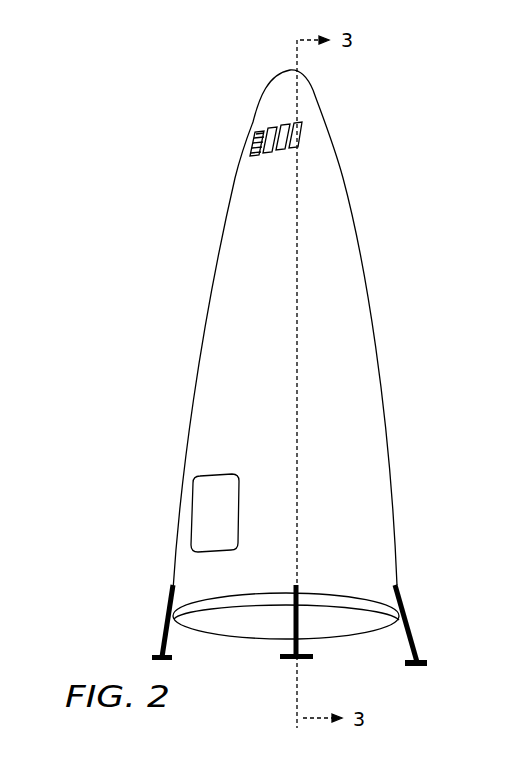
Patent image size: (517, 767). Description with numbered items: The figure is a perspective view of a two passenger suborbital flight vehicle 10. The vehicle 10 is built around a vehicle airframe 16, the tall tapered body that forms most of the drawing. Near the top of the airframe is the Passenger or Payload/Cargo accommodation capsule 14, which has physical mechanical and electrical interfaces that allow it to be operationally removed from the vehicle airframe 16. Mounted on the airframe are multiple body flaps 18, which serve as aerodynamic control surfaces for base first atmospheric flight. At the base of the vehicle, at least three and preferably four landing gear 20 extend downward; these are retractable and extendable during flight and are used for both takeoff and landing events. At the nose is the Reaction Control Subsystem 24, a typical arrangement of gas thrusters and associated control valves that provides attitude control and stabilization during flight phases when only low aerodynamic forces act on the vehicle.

The suborbital flight vehicle 10 is at (142, 262).
The accommodation capsule 14 is at (252, 140).
The vehicle airframe 16 is at (232, 315).
The body flaps 18 is at (207, 513).
The landing gear 20 is at (160, 630).
The Reaction Control Subsystem (RCS) 24 is at (292, 75).